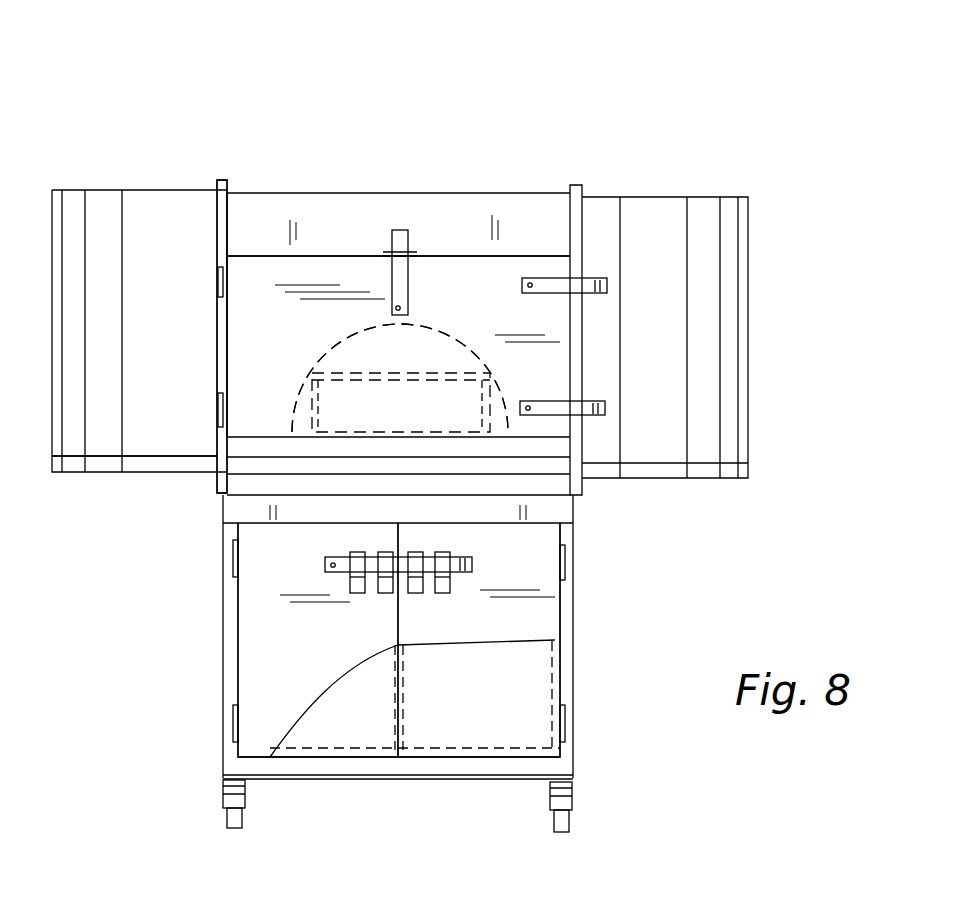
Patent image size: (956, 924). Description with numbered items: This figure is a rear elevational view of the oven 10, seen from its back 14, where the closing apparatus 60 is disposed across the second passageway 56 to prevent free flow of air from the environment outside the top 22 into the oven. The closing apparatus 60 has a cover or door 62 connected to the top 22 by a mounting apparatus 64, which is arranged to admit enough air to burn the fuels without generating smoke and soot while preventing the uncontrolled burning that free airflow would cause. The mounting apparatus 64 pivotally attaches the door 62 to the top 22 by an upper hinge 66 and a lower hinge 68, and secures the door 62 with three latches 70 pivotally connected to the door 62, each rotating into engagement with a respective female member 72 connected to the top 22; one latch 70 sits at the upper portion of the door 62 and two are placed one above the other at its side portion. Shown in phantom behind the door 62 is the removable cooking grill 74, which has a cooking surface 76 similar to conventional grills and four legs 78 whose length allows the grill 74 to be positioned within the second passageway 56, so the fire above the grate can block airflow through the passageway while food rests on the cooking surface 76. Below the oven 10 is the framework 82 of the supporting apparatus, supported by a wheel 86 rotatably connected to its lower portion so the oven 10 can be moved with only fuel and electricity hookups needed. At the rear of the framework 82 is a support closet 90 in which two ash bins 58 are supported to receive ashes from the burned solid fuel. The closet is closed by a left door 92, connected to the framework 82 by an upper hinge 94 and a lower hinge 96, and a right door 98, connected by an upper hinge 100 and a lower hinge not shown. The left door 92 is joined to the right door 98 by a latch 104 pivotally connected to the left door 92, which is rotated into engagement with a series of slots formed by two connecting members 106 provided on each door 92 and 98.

The oven 10 is at (728, 180).
The back 14 is at (50, 445).
The top 22 is at (50, 192).
The second passageway 56 is at (327, 368).
The ash bin 58 is at (338, 735).
The closing apparatus 60 is at (531, 254).
The door 62 is at (292, 256).
The mounting apparatus 64 is at (221, 267).
The upper hinge 66 is at (217, 287).
The lower hinge 68 is at (217, 410).
The latch 70 is at (408, 236).
The female member 72 is at (390, 250).
The removable cooking grill 74 is at (445, 372).
The cooking surface 76 is at (372, 380).
The legs 78 is at (320, 424).
The framework 82 is at (222, 588).
The wheel 86 is at (245, 824).
The support closet 90 is at (222, 642).
The left door 92 is at (238, 682).
The upper hinge 94 is at (232, 556).
The lower hinge 96 is at (232, 722).
The right door 98 is at (565, 600).
The upper hinge 100 is at (565, 560).
The latch 104 is at (468, 562).
The connecting members 106 is at (388, 595).